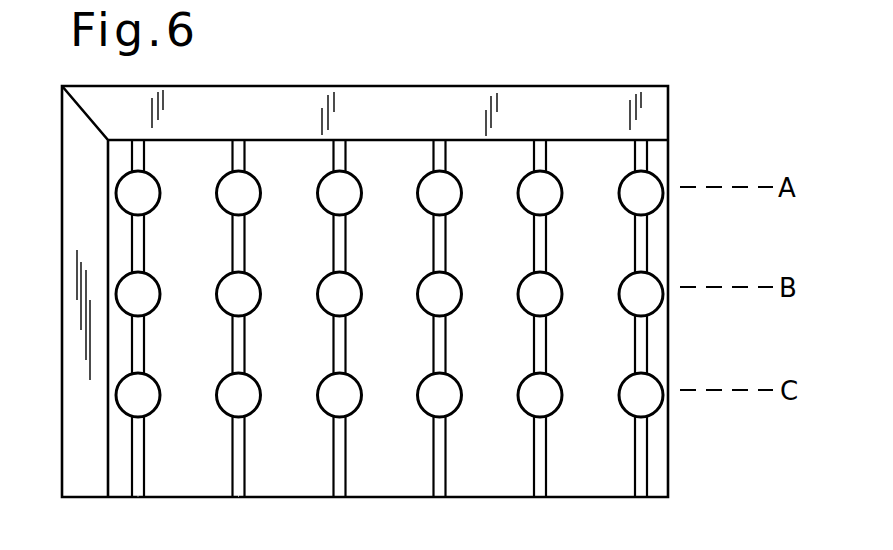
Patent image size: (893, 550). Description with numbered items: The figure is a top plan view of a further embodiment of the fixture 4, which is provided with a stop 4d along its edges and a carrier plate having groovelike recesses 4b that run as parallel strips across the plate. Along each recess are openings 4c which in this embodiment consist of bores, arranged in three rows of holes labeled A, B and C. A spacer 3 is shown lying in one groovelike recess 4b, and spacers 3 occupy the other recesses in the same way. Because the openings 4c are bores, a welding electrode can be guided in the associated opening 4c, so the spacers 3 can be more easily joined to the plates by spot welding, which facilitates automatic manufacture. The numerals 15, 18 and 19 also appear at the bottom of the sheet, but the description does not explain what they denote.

The spacer 3 is at (342, 472).
The fixture 4 is at (57, 417).
The groovelike recess 4b is at (143, 465).
The opening 4c is at (643, 185).
The stop 4d is at (353, 102).
The element 15 is at (102, 538).
The element 18 is at (160, 538).
The element 19 is at (220, 538).